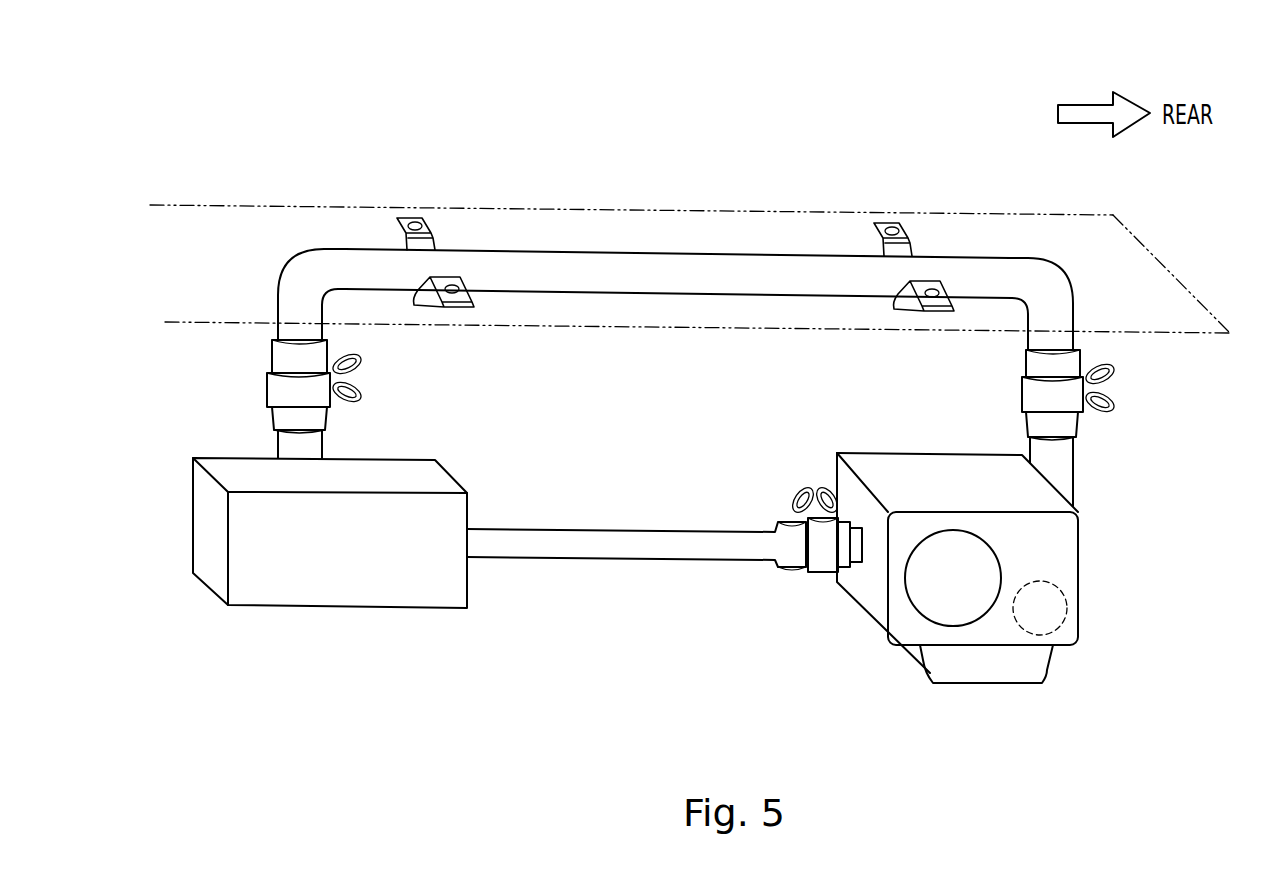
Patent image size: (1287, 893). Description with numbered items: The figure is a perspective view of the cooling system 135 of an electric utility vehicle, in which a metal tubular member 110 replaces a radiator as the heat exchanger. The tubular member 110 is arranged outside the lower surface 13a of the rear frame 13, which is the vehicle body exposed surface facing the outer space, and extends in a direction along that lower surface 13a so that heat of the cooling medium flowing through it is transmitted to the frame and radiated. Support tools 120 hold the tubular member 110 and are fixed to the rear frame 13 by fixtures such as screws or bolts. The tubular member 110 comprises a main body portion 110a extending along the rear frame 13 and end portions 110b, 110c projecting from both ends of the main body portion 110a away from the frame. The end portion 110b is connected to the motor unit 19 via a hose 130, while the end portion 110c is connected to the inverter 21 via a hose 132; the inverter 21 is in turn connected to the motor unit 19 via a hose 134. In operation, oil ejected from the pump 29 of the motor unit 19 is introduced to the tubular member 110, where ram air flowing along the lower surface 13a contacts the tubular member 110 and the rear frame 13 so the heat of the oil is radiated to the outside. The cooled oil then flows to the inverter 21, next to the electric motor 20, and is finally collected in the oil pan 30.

The rear frame 13 is at (690, 187).
The lower surface of the rear frame 13a is at (663, 207).
The motor unit 19 is at (982, 610).
The electric motor 20 is at (938, 590).
The inverter 21 is at (355, 608).
The pump 29 is at (1048, 585).
The oil pan 30 is at (1047, 675).
The tubular member 110 is at (679, 239).
The main body portion 110a is at (758, 272).
The end portion 110b is at (1058, 345).
The end portion 110c is at (292, 333).
The support tool 120 is at (413, 218).
The hose 130 is at (1083, 425).
The hose 132 is at (277, 422).
The hose 134 is at (610, 558).
The cooling system 135 is at (375, 163).